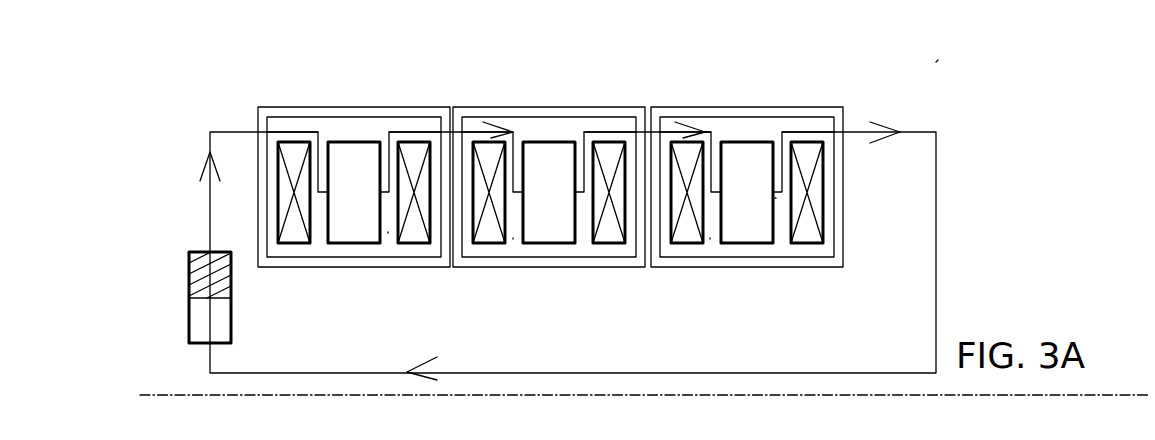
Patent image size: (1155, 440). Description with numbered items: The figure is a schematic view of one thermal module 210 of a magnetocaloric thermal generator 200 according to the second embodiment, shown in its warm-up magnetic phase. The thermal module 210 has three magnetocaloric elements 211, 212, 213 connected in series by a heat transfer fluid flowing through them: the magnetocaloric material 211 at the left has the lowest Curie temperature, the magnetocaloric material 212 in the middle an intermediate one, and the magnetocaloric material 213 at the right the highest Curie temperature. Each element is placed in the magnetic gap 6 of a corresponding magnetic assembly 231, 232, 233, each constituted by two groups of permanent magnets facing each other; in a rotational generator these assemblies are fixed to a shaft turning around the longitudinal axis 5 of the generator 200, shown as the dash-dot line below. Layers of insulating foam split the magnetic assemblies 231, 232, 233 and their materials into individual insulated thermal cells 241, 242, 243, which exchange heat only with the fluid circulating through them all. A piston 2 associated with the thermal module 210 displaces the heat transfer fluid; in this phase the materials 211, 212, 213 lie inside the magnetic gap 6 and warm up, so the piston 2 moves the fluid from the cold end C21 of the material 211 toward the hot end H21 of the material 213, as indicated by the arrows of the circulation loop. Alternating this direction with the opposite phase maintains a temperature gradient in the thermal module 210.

The thermal generator 200 is at (943, 69).
The thermal module 210 is at (817, 89).
The magnetocaloric element 211 is at (355, 186).
The magnetocaloric element 212 is at (543, 177).
The magnetocaloric element 213 is at (746, 176).
The insulated thermal cell 241 is at (312, 114).
The insulated thermal cell 242 is at (503, 112).
The insulated thermal cell 243 is at (697, 112).
The magnetic assembly 231 is at (413, 243).
The magnetic assembly 232 is at (610, 243).
The magnetic assembly 233 is at (805, 243).
The magnetic gap 6 is at (388, 232).
The piston 2 is at (190, 302).
The longitudinal axis 5 is at (581, 396).
The cold end C21 is at (329, 214).
The hot end H21 is at (776, 198).